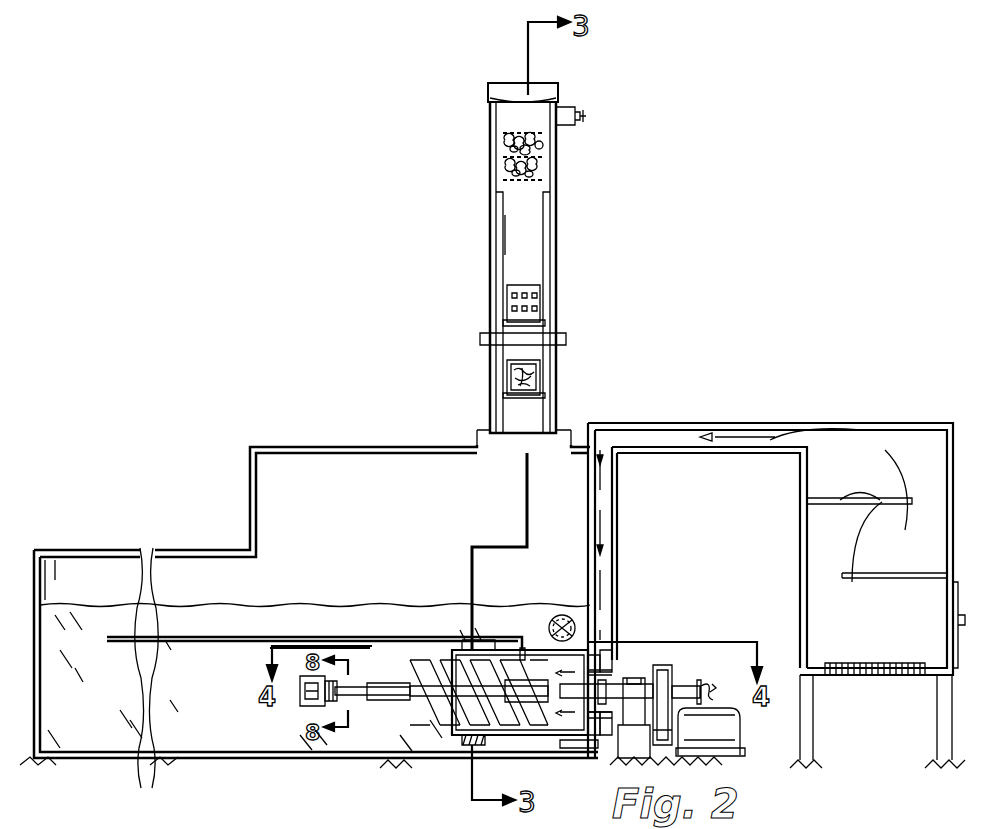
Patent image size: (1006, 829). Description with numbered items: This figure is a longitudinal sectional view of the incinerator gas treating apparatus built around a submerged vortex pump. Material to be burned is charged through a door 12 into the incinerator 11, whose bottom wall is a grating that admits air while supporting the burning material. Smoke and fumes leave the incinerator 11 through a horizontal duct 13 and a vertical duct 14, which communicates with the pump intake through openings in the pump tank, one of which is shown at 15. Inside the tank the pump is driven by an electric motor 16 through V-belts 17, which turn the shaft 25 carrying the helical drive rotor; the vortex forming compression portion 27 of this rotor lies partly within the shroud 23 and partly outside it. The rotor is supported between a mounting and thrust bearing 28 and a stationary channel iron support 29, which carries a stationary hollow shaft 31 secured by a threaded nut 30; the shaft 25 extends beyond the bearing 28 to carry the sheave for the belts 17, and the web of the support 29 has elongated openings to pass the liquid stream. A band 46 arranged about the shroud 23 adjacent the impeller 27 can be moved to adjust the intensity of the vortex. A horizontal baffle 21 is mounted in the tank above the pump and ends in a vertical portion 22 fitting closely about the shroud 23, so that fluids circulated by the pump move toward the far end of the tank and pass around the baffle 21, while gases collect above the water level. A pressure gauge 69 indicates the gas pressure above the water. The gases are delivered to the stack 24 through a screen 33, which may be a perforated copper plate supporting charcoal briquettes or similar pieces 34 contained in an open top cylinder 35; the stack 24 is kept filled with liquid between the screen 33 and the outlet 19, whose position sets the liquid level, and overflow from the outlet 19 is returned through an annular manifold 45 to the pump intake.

The incinerator 11 is at (835, 428).
The door 12 is at (958, 613).
The horizontal duct 13 is at (672, 439).
The vertical duct 14 is at (603, 662).
The opening 15 is at (610, 648).
The electric motor 16 is at (736, 730).
The V-belts 17 is at (666, 674).
The outlet 19 is at (562, 110).
The horizontal baffle 21 is at (227, 642).
The vertical portion 22 is at (526, 648).
The shroud 23 is at (526, 740).
The stack 24 is at (556, 258).
The shaft 25 is at (504, 673).
The vortex forming compression portion 27 is at (424, 660).
The mounting and thrust bearing 28 is at (642, 678).
The stationary channel iron support 29 is at (304, 706).
The threaded nut 30 is at (343, 701).
The stationary hollow shaft 31 is at (360, 690).
The screen 33 is at (525, 392).
The charcoal briquettes 34 is at (537, 381).
The open top cylinder 35 is at (540, 372).
The annular manifold 45 is at (582, 748).
The band 46 is at (462, 750).
The pressure gauge 69 is at (565, 625).